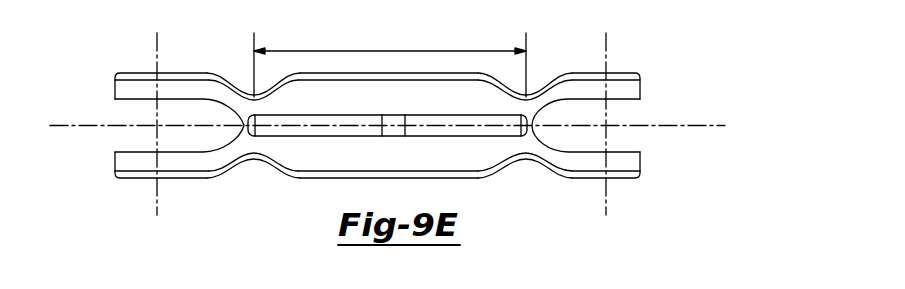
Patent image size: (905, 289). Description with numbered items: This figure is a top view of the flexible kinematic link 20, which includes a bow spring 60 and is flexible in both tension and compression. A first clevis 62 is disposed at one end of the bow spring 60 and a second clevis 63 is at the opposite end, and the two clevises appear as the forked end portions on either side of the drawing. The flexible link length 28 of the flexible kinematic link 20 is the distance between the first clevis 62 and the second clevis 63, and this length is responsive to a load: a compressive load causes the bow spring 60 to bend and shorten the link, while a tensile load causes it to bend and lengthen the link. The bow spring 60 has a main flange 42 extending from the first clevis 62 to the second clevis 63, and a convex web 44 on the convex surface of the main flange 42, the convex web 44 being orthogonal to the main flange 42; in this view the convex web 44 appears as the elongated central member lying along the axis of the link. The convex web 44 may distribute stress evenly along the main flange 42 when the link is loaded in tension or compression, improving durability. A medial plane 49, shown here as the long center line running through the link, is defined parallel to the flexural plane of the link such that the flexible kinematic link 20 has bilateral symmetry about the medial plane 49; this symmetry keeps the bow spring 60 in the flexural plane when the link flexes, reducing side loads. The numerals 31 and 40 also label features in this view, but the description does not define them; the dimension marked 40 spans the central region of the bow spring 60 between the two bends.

The flexible kinematic link 20 is at (387, 116).
The bow spring 60 is at (387, 116).
The flexible link length 28 is at (253, 89).
The central portion 31 is at (377, 89).
The length 40 is at (390, 51).
The main flange 42 is at (389, 107).
The convex web 44 is at (317, 132).
The medial plane 49 is at (715, 127).
The first clevis 62 is at (627, 73).
The second clevis 63 is at (142, 73).